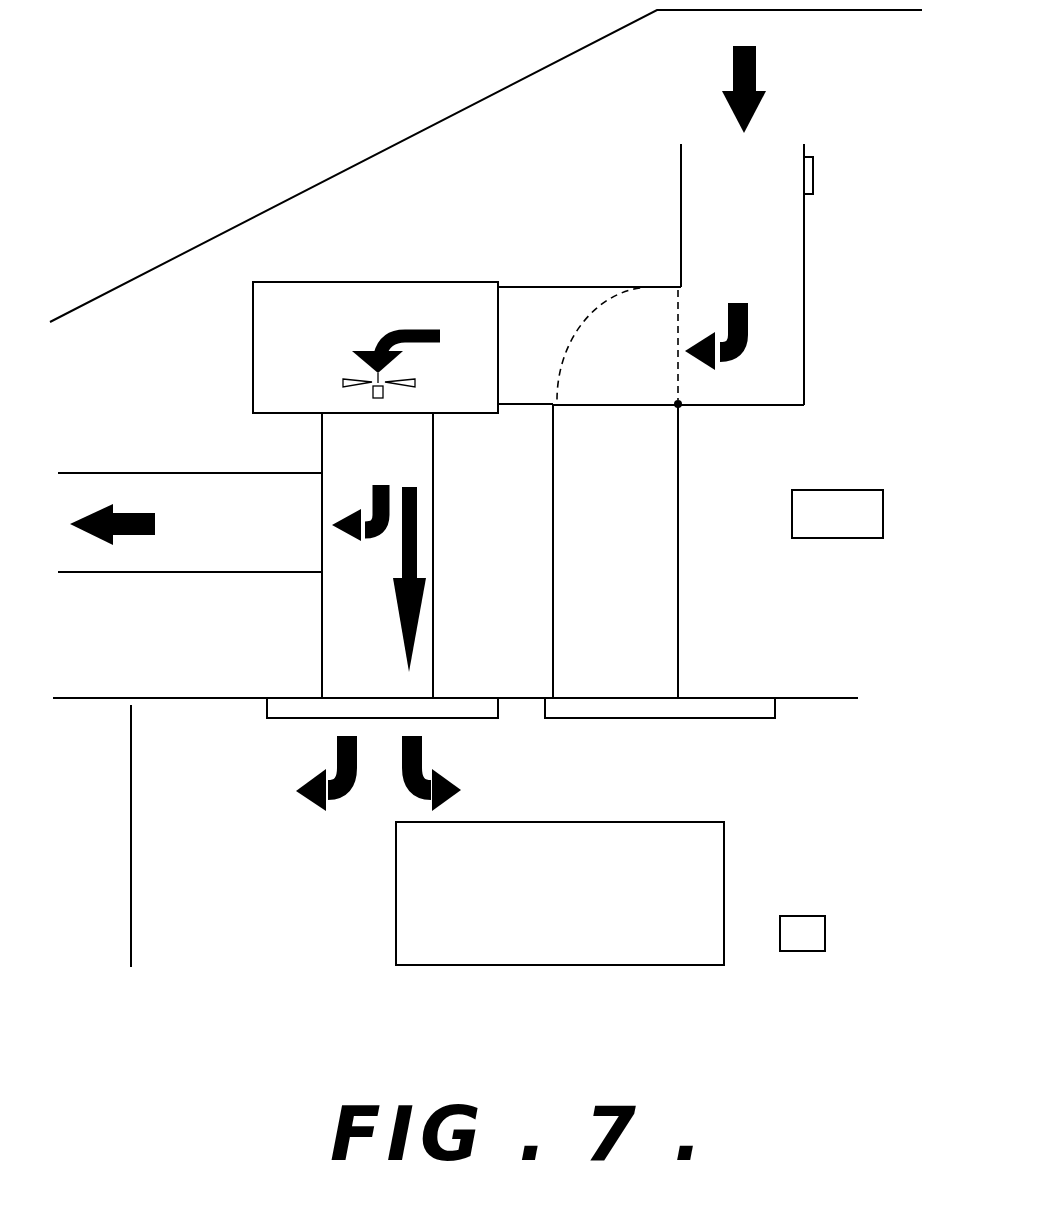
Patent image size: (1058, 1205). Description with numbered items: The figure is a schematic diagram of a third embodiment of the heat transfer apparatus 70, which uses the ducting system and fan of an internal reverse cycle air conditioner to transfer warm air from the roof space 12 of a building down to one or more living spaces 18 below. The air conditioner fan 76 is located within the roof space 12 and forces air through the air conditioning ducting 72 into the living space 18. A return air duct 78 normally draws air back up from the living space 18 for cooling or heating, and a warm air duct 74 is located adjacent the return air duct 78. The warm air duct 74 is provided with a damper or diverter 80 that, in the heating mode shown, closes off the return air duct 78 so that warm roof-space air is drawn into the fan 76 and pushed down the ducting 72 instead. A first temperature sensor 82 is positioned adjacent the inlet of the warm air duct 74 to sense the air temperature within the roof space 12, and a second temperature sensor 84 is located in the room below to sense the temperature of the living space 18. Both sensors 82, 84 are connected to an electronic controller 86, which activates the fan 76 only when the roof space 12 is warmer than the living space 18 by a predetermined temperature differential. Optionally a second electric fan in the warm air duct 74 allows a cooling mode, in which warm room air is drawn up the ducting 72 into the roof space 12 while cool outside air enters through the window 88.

The roof space 12 is at (486, 204).
The living space 18 is at (455, 720).
The heat transfer apparatus 70 is at (464, 232).
The air conditioning ducting 72 is at (436, 490).
The warm air duct 74 is at (804, 270).
The fan 76 is at (327, 283).
The return air duct 78 is at (680, 628).
The damper 80 is at (598, 412).
The first temperature sensor 82 is at (813, 173).
The second temperature sensor 84 is at (825, 934).
The electronic controller 86 is at (832, 540).
The window 88 is at (394, 924).